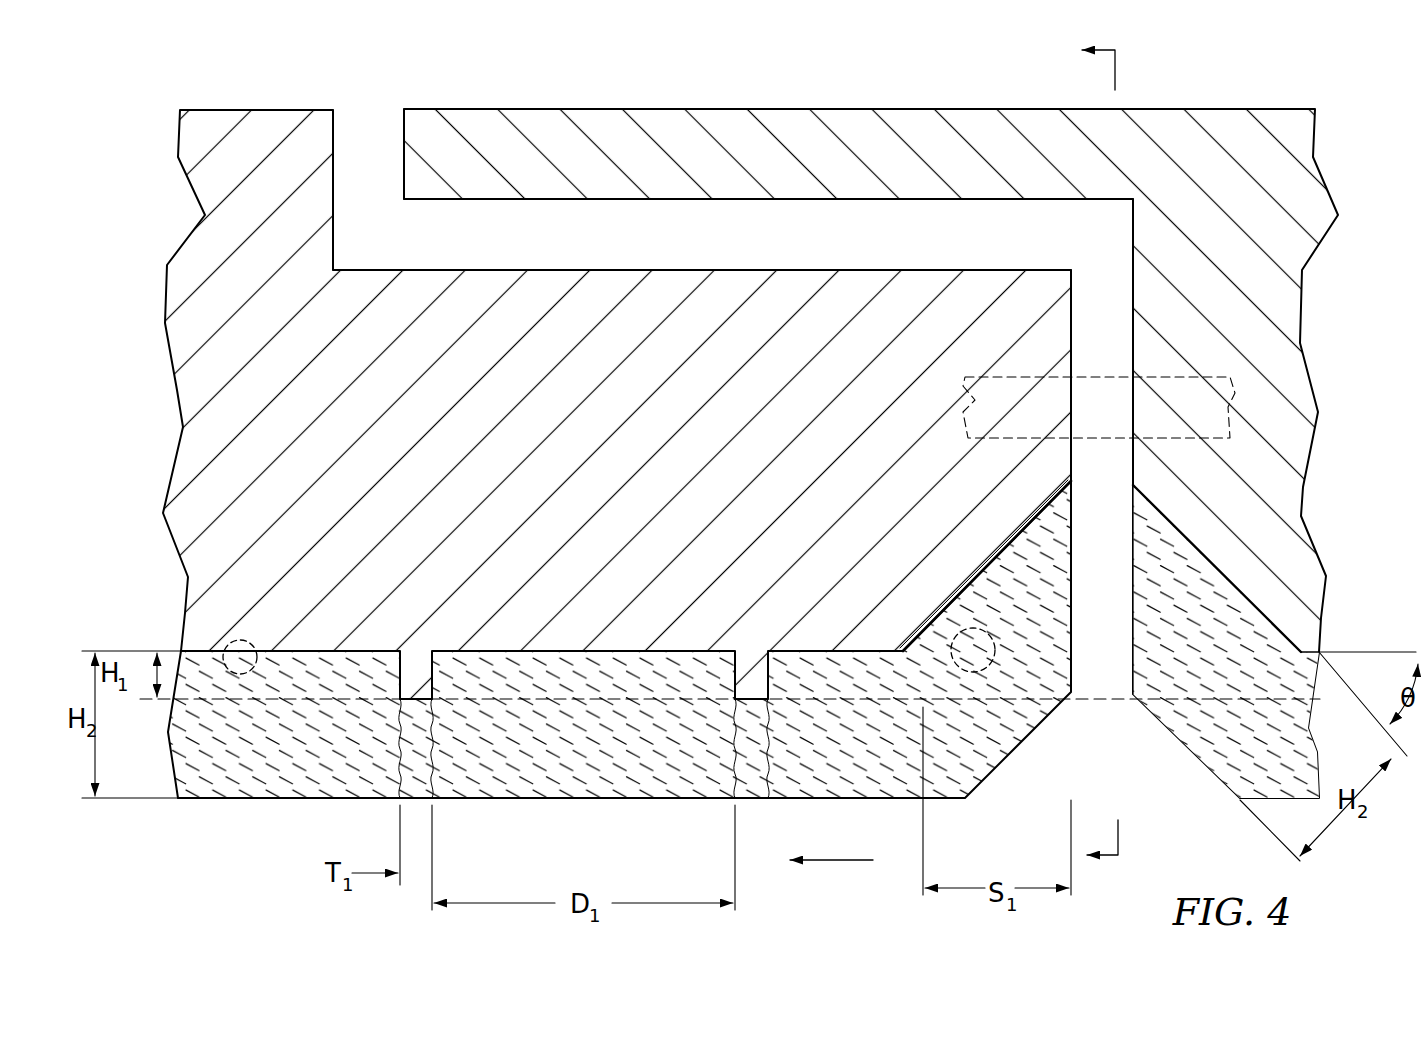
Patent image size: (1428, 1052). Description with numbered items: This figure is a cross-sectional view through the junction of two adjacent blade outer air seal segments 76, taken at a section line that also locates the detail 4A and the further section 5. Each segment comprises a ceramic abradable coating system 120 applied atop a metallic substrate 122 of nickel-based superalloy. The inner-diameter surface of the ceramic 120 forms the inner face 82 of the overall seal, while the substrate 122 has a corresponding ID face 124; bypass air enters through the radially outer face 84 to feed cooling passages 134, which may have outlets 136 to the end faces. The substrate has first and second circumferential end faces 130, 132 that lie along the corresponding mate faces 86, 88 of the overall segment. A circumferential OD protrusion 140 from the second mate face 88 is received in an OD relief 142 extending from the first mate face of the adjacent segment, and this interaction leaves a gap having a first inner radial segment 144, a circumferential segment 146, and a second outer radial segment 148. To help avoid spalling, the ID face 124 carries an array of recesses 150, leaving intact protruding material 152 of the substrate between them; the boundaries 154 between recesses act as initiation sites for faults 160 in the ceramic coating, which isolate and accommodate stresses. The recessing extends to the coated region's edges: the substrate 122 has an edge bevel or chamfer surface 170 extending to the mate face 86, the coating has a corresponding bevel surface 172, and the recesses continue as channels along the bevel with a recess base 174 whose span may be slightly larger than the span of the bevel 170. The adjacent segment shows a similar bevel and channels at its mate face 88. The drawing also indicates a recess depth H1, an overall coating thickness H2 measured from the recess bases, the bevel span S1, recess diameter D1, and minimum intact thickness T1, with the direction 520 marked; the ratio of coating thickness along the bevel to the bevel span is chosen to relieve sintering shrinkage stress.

The BOAS segment 76 is at (1348, 169).
The inner face 82 is at (659, 800).
The radially outer face 84 is at (824, 108).
The first mate face 86 is at (1080, 342).
The second mate face 88 is at (1121, 511).
The ceramic abradable coating system 120 is at (205, 787).
The metallic substrate 122 is at (269, 602).
The ID face 124 is at (573, 703).
The first circumferential end face 130 is at (1071, 457).
The second circumferential end face 132 is at (1131, 300).
The cooling passages 134 is at (985, 392).
The outlets 136 is at (1077, 402).
The circumferential OD protrusion 140 is at (697, 143).
The OD relief 142 is at (452, 230).
The first radial segment 144 is at (1085, 298).
The circumferential segment 146 is at (852, 231).
The second radial segment 148 is at (366, 148).
The recesses 150 is at (516, 682).
The protruding material 152 is at (418, 677).
The boundaries 154 is at (735, 700).
The faults 160 is at (734, 774).
The substrate bevel surface 170 is at (942, 622).
The coating bevel surface 172 is at (1002, 764).
The recess base 174 is at (999, 555).
The direction 520 is at (828, 862).
The section line 5- 5 is at (1116, 453).
The detail view 4A is at (233, 643).